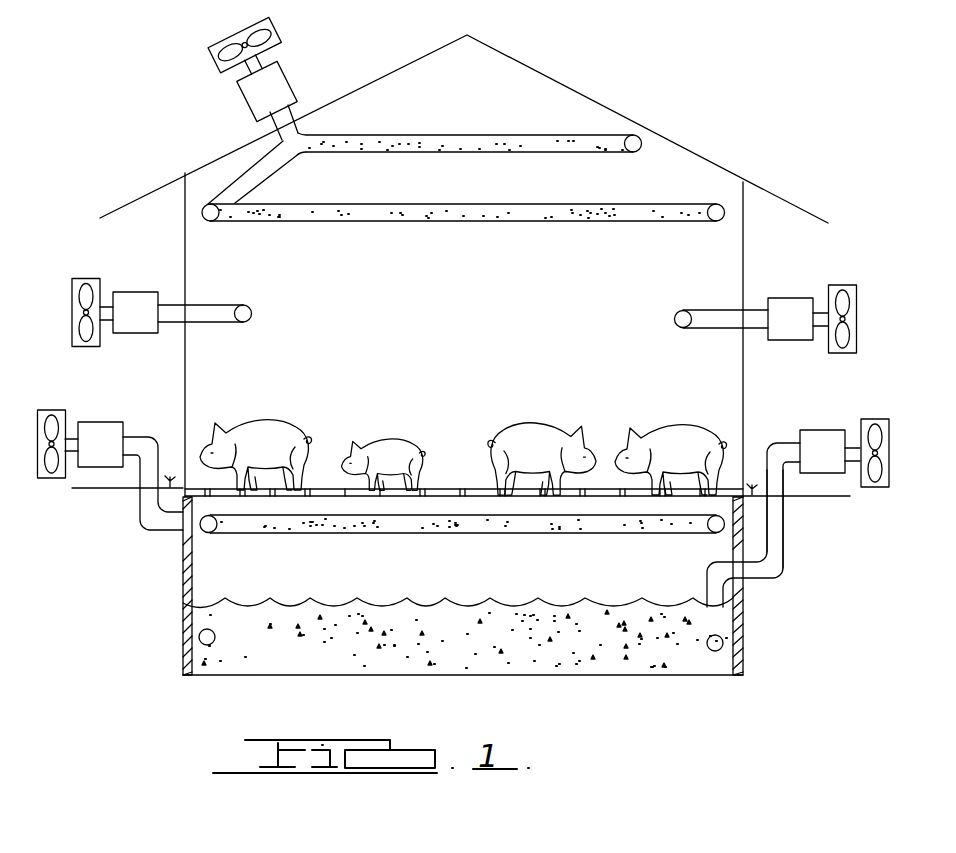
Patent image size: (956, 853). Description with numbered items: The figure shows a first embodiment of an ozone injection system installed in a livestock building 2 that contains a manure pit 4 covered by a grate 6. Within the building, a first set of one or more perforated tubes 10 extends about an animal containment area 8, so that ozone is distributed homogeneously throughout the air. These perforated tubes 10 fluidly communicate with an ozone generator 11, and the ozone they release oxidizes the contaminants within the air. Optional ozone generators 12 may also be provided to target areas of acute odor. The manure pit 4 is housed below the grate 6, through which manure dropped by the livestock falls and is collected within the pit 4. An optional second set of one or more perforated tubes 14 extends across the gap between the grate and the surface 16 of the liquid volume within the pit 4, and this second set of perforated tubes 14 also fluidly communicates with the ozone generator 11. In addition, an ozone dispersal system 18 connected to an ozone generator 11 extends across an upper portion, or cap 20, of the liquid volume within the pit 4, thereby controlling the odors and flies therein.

The livestock building 2 is at (521, 97).
The manure pit 4 is at (232, 643).
The grate 6 is at (214, 494).
The animal containment area 8 is at (673, 397).
The perforated tubes 10 is at (676, 205).
The ozone generator 11 is at (278, 83).
The optional ozone generators 12 is at (130, 297).
The second set of perforated tubes 14 is at (358, 528).
The surface of the liquid volume 16 is at (526, 600).
The ozone dispersal system 18 is at (775, 569).
The cap of the liquid volume 20 is at (627, 652).